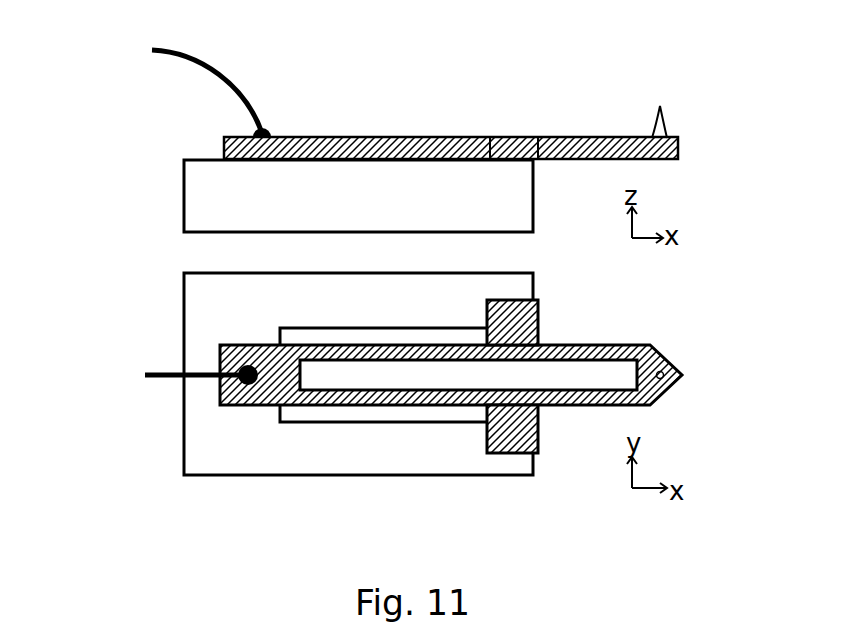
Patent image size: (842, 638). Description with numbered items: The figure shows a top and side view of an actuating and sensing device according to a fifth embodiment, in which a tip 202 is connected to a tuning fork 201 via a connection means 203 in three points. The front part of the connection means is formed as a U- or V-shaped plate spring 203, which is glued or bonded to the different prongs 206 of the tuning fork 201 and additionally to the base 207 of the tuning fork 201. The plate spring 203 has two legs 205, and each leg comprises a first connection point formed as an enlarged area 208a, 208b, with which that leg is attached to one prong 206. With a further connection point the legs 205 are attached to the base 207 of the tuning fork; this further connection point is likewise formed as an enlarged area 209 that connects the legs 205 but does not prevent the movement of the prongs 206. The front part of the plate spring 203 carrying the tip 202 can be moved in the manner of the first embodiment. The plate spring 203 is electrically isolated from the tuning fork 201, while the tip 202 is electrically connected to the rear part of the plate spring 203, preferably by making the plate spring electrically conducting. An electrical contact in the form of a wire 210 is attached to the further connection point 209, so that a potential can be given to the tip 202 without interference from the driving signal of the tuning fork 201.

The tuning fork 201 is at (245, 457).
The tip 202 is at (663, 117).
The connection means 203 is at (500, 290).
The legs 205 is at (592, 350).
The prongs 206 is at (376, 203).
The base 207 is at (240, 333).
The enlarged area 208a is at (518, 324).
The enlarged area 208b is at (512, 433).
The enlarged area 209 is at (262, 382).
The wire 210 is at (203, 52).